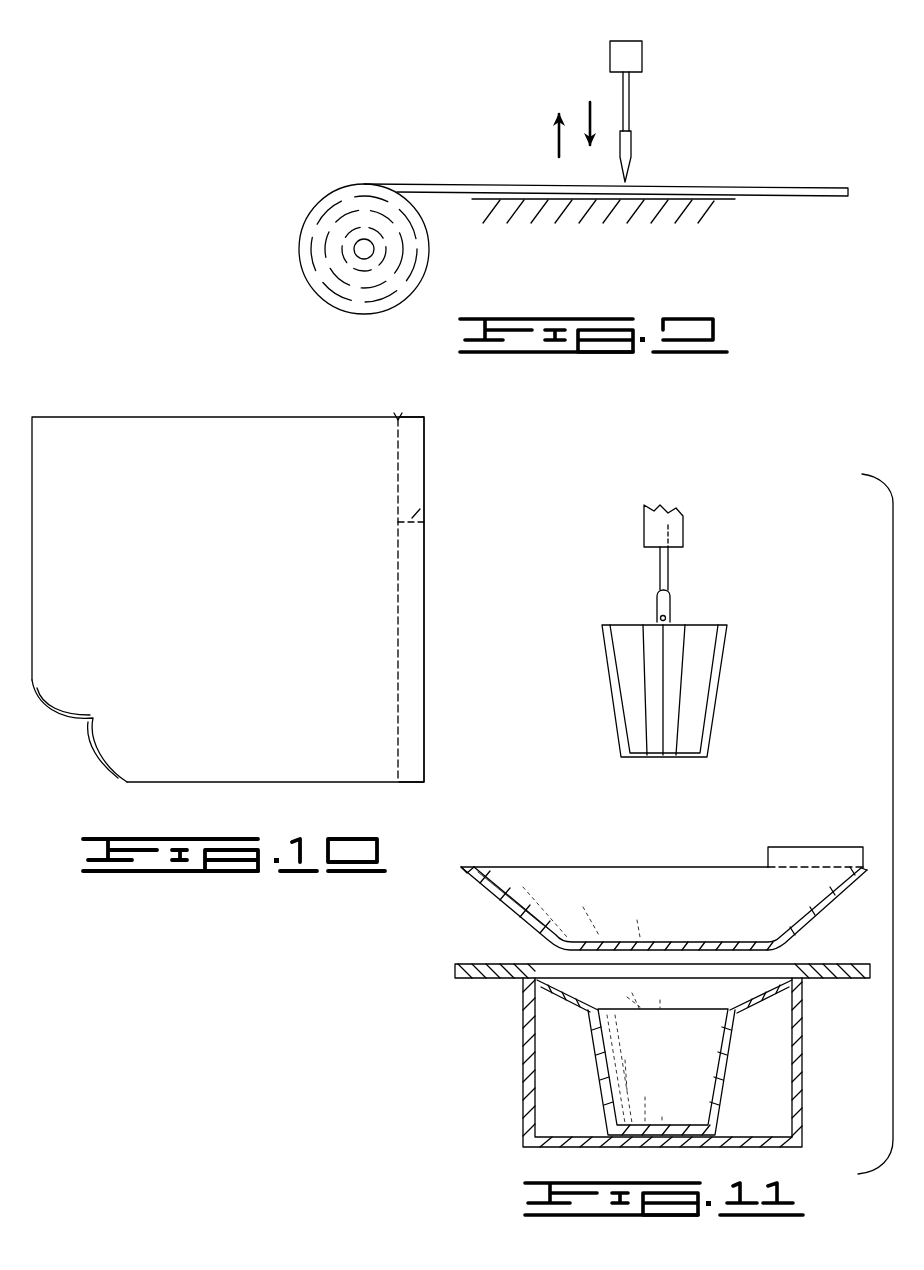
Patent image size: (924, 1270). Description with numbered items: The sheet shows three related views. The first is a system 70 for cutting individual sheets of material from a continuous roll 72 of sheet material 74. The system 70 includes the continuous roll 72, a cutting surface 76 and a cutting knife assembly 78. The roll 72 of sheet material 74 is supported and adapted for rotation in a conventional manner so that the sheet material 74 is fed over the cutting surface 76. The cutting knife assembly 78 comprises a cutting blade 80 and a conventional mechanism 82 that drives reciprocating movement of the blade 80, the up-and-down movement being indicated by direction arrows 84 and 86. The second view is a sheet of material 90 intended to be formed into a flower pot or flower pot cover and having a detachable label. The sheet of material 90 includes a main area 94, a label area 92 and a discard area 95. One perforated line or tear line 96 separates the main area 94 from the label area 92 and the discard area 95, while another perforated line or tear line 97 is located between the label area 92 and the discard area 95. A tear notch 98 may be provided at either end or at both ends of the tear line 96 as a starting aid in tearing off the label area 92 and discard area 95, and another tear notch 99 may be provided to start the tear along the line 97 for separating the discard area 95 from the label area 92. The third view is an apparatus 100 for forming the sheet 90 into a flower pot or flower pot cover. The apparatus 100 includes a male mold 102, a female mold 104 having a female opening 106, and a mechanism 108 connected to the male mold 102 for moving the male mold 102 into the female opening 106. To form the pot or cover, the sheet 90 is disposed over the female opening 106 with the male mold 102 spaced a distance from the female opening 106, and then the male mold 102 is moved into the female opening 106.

In FIG. 9, the system 70 is at (318, 176).
In FIG. 9, the continuous roll 72 is at (305, 228).
In FIG. 9, the sheet material 74 is at (485, 185).
In FIG. 9, the cutting surface 76 is at (735, 199).
In FIG. 9, the cutting knife assembly 78 is at (645, 50).
In FIG. 9, the cutting blade 80 is at (634, 152).
In FIG. 9, the mechanism 82 is at (610, 45).
In FIG. 9, the direction arrow 84 is at (590, 107).
In FIG. 9, the direction arrow 86 is at (556, 145).
In FIG. 10, the sheet of material 90 is at (58, 405).
In FIG. 11, the sheet of material 90 is at (587, 863).
In FIG. 10, the label area 92 is at (411, 453).
In FIG. 11, the label area 92 is at (805, 847).
In FIG. 10, the main area 94 is at (172, 440).
In FIG. 11, the main area 94 is at (697, 883).
In FIG. 10, the discard area 95 is at (409, 700).
In FIG. 10, the perforated line or tear line 96 is at (398, 620).
In FIG. 11, the perforated line or tear line 96 is at (843, 868).
In FIG. 10, the perforated line or tear line 97 is at (420, 509).
In FIG. 10, the tear notch 98 is at (398, 418).
In FIG. 10, the tear notch 99 is at (424, 522).
In FIG. 11, the apparatus 100 is at (617, 587).
In FIG. 11, the male mold 102 is at (710, 622).
In FIG. 11, the female mold 104 is at (521, 1038).
In FIG. 11, the female opening 106 is at (683, 1060).
In FIG. 11, the mechanism 108 is at (685, 525).